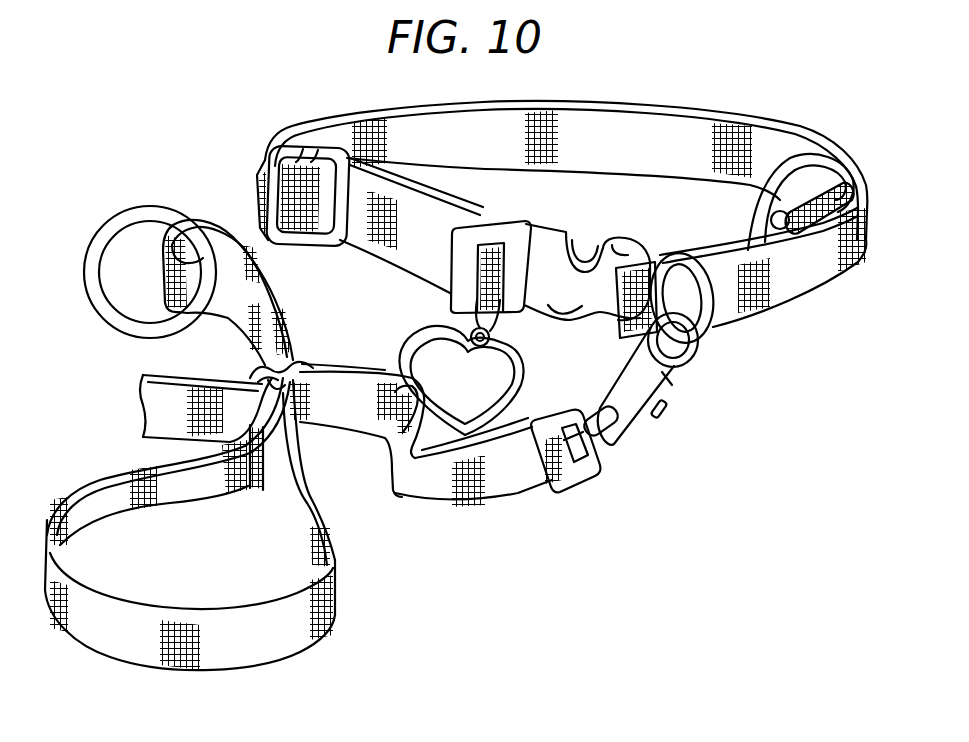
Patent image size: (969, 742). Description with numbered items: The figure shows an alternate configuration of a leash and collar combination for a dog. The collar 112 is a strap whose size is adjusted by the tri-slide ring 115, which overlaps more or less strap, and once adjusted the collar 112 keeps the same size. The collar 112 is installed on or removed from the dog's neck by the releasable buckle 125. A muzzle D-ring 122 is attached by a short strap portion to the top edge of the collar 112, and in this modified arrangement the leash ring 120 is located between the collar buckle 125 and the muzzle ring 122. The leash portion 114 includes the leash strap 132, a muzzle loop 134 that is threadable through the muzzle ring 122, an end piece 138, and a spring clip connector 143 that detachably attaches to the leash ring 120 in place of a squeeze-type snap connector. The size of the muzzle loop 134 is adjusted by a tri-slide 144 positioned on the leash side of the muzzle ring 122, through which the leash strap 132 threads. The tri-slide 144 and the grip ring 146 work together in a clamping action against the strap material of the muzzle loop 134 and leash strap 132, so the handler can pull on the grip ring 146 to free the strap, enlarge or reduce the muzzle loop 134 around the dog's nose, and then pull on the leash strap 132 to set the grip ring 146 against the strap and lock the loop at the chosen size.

The collar 112 is at (768, 112).
The leash portion 114 is at (529, 510).
The tri-slide ring 115 is at (270, 163).
The leash ring 120 is at (707, 312).
The muzzle D-ring 122 is at (830, 152).
The buckle 125 is at (548, 236).
The leash strap 132 is at (174, 418).
The muzzle loop 134 is at (295, 637).
The end piece 138 is at (407, 508).
The spring clip connector 143 is at (670, 387).
The tri-slide 144 is at (299, 357).
The grip ring 146 is at (107, 237).